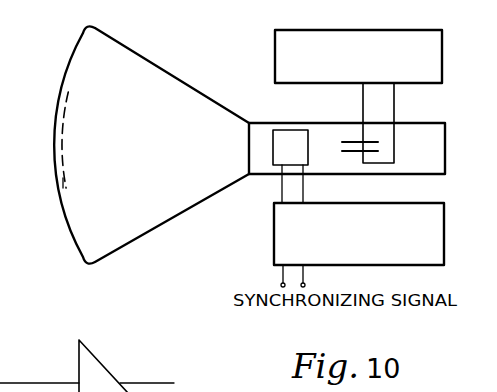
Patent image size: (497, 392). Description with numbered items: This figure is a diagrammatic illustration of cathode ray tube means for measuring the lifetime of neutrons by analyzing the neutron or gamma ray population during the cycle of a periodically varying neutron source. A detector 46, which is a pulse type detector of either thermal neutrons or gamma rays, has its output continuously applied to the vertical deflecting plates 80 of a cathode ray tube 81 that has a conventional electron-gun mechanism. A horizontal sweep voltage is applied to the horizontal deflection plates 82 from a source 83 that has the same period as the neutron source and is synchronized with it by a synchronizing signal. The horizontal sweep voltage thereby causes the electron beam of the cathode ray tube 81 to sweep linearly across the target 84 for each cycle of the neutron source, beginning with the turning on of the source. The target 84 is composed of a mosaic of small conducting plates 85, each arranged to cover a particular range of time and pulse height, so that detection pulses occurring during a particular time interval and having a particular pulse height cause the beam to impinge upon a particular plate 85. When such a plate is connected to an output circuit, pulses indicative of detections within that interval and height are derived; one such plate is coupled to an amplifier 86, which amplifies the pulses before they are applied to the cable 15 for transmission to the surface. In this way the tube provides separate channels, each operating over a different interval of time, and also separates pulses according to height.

The cable 15 is at (160, 383).
The detector 46 is at (274, 28).
The vertical deflecting plates 80 is at (349, 152).
The cathode ray tube 81 is at (171, 209).
The horizontal deflection plates 82 is at (278, 162).
The horizontal sweep voltage source 83 is at (274, 212).
The target 84 is at (57, 143).
The conducting plates 85 is at (63, 183).
The amplifier 86 is at (102, 369).